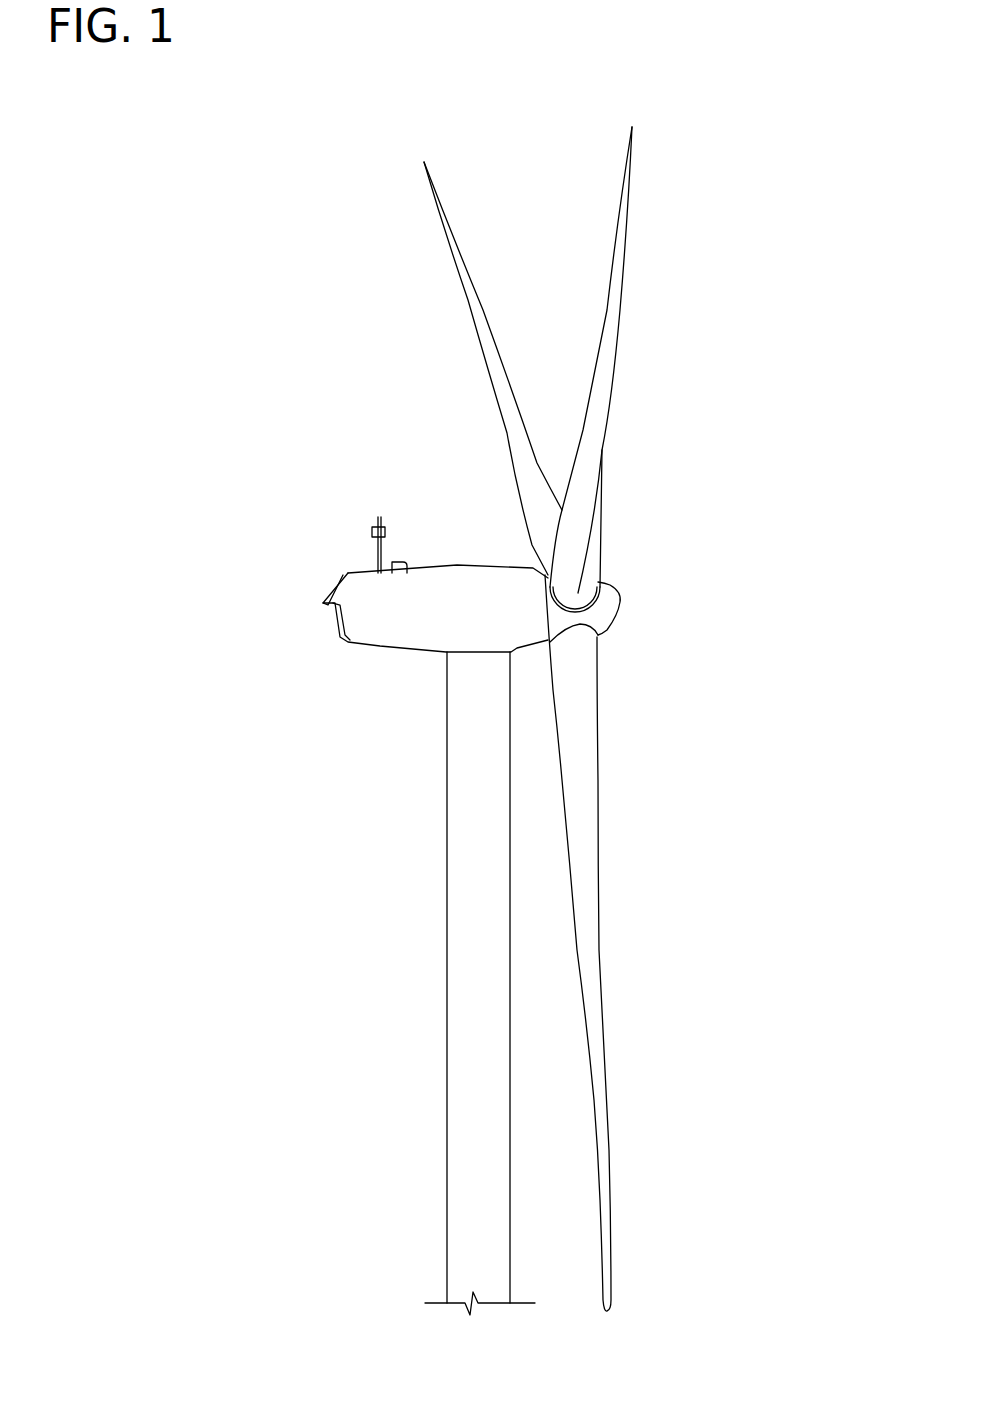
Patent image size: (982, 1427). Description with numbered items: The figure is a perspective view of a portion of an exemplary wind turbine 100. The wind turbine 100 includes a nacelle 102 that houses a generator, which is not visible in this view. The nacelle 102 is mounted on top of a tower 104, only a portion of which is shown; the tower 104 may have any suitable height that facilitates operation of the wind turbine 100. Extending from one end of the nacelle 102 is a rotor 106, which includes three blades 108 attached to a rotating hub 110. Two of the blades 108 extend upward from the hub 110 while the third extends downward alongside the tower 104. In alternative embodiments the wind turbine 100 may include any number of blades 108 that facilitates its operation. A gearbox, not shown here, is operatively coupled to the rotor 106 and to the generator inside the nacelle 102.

The wind turbine 100 is at (310, 209).
The nacelle 102 is at (374, 649).
The tower 104 is at (447, 928).
The rotor 106 is at (678, 340).
The blades 108 is at (462, 247).
The rotating hub 110 is at (613, 618).